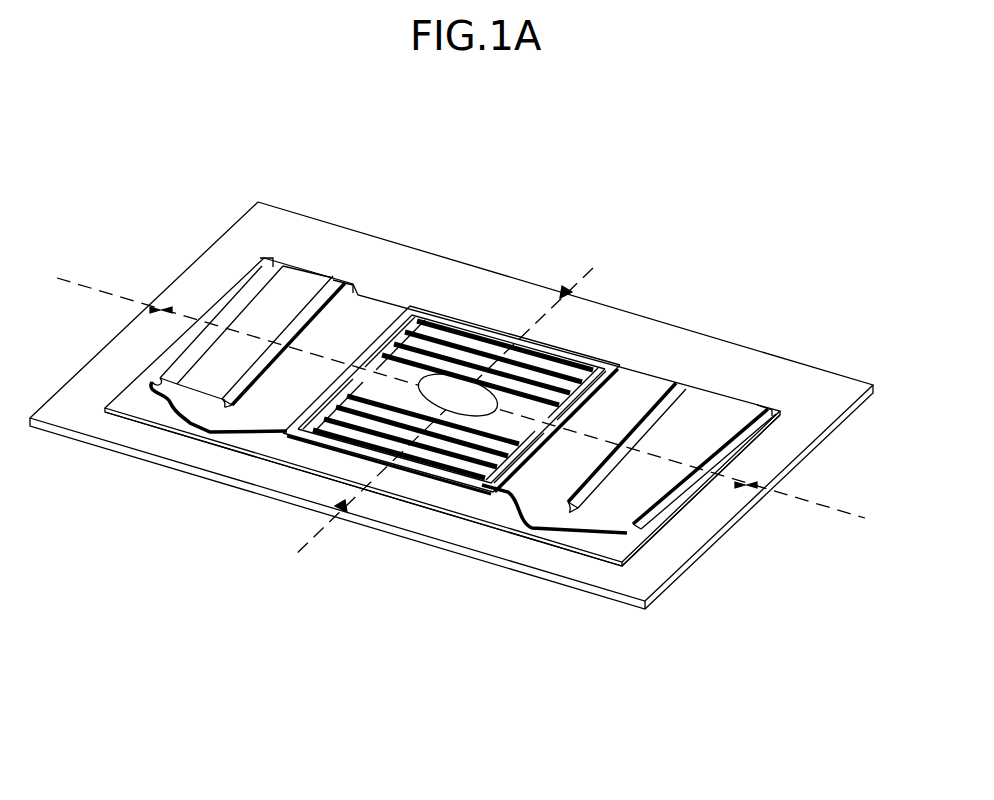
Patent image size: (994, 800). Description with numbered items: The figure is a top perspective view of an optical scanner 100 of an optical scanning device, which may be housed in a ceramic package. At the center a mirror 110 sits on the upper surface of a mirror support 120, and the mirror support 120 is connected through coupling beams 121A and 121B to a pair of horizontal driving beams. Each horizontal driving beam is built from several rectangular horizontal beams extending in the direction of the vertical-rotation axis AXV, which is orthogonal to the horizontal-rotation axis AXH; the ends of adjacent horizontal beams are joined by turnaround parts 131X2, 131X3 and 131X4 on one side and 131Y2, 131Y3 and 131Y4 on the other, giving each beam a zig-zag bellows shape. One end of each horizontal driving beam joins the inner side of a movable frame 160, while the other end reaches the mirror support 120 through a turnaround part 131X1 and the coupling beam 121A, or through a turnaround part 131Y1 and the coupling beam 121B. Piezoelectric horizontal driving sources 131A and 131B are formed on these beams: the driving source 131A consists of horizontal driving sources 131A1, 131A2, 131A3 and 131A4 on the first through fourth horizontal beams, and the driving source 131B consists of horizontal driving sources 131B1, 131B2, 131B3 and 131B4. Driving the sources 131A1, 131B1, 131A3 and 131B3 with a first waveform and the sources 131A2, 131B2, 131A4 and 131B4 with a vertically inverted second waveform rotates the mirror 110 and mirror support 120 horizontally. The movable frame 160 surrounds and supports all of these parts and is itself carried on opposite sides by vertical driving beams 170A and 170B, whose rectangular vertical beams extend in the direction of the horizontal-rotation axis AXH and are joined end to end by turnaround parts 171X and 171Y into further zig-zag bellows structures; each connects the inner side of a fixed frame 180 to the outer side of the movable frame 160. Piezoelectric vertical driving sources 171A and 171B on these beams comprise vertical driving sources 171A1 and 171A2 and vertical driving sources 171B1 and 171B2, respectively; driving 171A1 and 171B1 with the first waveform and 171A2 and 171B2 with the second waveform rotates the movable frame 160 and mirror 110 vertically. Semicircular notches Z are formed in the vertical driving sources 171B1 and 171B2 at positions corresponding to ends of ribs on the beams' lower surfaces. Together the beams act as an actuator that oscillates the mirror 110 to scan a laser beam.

The optical scanner 100 is at (74, 119).
The mirror 110 is at (507, 380).
The mirror support 120 is at (790, 478).
The coupling beam 121A is at (457, 387).
The coupling beam 121B is at (355, 385).
The horizontal driving source 131A is at (840, 178).
The horizontal driving source 131A1 is at (573, 360).
The horizontal driving source 131A2 is at (580, 373).
The horizontal driving source 131A3 is at (593, 383).
The horizontal driving source 131A4 is at (660, 378).
The horizontal driving source 131B is at (510, 645).
The horizontal driving source 131B1 is at (447, 443).
The horizontal driving source 131B2 is at (473, 437).
The horizontal driving source 131B3 is at (443, 447).
The horizontal driving source 131B4 is at (423, 450).
The turnaround part 131X1 is at (400, 353).
The turnaround part 131X2 is at (548, 405).
The turnaround part 131X3 is at (418, 345).
The turnaround part 131X4 is at (550, 385).
The turnaround part 131Y1 is at (210, 415).
The turnaround part 131Y2 is at (540, 470).
The turnaround part 131Y3 is at (335, 400).
The turnaround part 131Y4 is at (530, 480).
The movable frame 160 is at (727, 538).
The vertical driving beam 170A is at (520, 526).
The vertical driving beam 170B is at (165, 410).
The vertical driving source 171A is at (845, 290).
The vertical driving source 171A1 is at (667, 380).
The vertical driving source 171A2 is at (732, 403).
The vertical driving source 171B is at (180, 118).
The vertical driving source 171B1 is at (303, 280).
The vertical driving source 171B2 is at (380, 303).
The turnaround part 171X is at (548, 522).
The turnaround part 171Y is at (165, 430).
The fixed frame 180 is at (667, 538).
The horizontal-rotation axis AXH is at (455, 399).
The vertical-rotation axis AXV is at (487, 409).
The notch Z is at (152, 377).